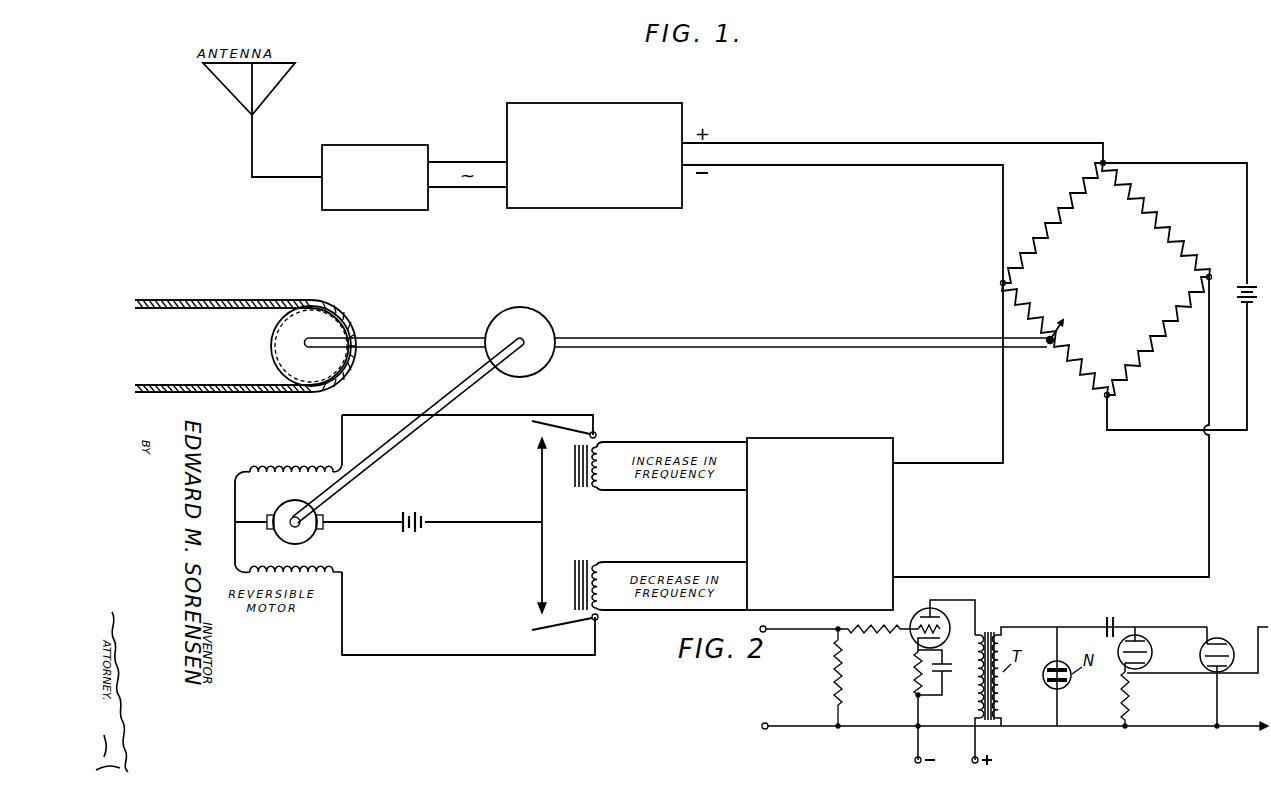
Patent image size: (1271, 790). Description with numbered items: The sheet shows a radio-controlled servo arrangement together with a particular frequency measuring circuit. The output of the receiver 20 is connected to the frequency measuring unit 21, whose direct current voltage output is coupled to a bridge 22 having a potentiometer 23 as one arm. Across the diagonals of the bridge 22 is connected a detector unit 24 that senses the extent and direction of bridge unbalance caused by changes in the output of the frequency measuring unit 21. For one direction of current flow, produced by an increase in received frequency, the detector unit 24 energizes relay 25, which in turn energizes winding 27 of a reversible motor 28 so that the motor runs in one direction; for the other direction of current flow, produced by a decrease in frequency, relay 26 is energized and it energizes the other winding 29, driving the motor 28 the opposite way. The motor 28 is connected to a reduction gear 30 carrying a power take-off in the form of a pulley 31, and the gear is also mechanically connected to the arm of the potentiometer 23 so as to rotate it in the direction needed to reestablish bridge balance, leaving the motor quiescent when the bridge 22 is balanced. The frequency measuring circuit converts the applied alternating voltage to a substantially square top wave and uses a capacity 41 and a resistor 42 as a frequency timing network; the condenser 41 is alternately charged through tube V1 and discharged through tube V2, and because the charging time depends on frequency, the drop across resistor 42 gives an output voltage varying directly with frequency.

In FIG. 1, the receiver 20 is at (371, 149).
In FIG. 1, the frequency measuring unit 21 is at (590, 108).
In FIG. 1, the bridge 22 is at (1166, 224).
In FIG. 1, the potentiometer 23 is at (1051, 352).
In FIG. 1, the detector unit 24 is at (895, 508).
In FIG. 1, the relay 25 is at (601, 438).
In FIG. 1, the relay 26 is at (605, 621).
In FIG. 1, the winding 27 is at (283, 466).
In FIG. 1, the reversible motor 28 is at (314, 538).
In FIG. 1, the winding 29 is at (336, 572).
In FIG. 1, the reduction gear 30 is at (553, 334).
In FIG. 1, the pulley 31 is at (333, 362).
In FIG. 2, the capacity 41 is at (1116, 624).
In FIG. 2, the resistor 42 is at (1134, 700).
In FIG. 2, the tube V1 is at (1151, 656).
In FIG. 2, the tube V2 is at (1222, 640).